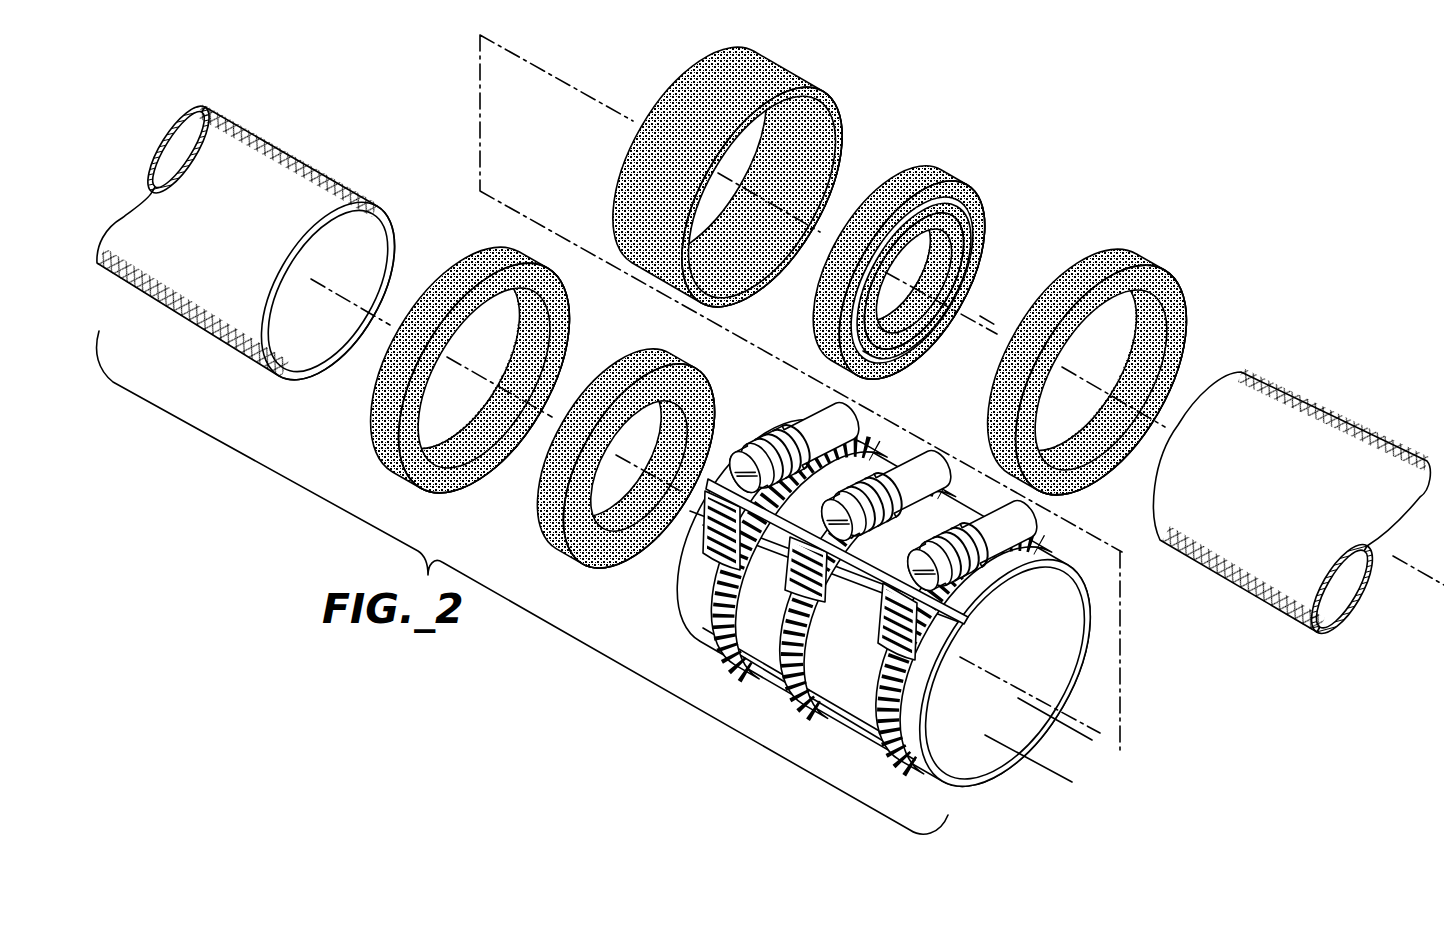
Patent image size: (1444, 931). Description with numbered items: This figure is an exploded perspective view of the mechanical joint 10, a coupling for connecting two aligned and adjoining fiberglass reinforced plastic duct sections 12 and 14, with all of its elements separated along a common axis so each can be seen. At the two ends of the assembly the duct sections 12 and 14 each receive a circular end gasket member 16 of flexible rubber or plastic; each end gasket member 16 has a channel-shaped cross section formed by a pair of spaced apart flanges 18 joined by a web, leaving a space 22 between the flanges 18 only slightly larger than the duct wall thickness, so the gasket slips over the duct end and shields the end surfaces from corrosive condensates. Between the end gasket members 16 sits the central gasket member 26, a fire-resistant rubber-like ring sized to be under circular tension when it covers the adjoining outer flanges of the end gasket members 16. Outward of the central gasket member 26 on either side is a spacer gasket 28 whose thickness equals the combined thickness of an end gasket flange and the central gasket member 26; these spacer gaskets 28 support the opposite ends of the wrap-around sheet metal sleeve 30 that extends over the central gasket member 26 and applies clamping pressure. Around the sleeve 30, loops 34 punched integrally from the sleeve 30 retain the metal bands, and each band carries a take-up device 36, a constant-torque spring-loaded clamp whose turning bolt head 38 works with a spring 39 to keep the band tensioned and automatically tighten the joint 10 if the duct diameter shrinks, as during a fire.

The mechanical joint 10 is at (1021, 153).
The duct section 12 is at (283, 156).
The duct section 14 is at (1325, 410).
The end gasket member 16 is at (553, 540).
The flange 18 is at (978, 243).
The space 22 is at (948, 207).
The central gasket member 26 is at (768, 85).
The spacer gasket 28 is at (395, 456).
The sleeve 30 is at (901, 617).
The loop 34 is at (878, 660).
The take-up device 36 is at (900, 468).
The head 38 is at (742, 460).
The spring 39 is at (748, 462).